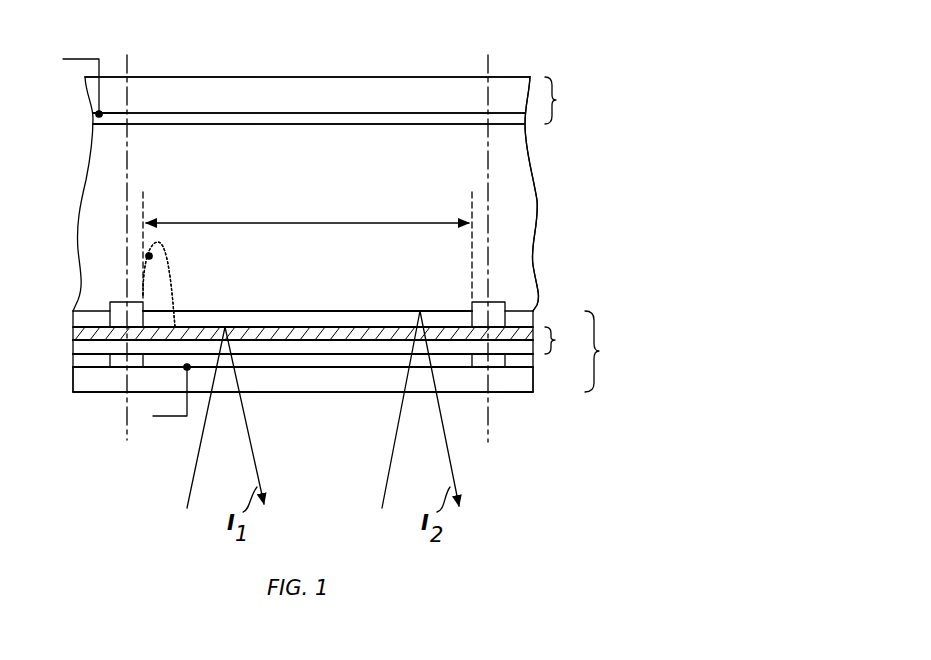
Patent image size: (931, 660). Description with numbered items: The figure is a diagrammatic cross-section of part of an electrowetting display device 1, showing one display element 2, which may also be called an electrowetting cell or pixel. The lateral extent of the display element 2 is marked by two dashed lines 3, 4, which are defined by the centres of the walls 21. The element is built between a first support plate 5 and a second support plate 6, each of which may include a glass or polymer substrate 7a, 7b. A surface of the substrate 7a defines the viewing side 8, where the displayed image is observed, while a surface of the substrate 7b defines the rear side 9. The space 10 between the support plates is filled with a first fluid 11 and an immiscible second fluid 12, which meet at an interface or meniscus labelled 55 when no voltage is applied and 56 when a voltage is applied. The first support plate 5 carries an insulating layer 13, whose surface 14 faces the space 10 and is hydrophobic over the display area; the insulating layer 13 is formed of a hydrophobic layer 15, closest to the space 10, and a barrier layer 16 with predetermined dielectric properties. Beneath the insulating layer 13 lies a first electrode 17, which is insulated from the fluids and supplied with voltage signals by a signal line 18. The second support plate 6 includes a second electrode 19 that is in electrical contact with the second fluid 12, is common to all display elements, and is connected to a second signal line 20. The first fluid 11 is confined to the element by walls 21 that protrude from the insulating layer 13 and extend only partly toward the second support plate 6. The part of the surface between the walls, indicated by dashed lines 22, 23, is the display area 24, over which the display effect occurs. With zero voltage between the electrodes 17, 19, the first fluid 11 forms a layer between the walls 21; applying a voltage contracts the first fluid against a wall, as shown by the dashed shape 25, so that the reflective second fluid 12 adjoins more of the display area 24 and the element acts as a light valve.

The electrowetting display device 1 is at (598, 51).
The display element 2 is at (306, 41).
The dashed line 3 is at (127, 60).
The dashed line 4 is at (488, 60).
The first support plate 5 is at (345, 351).
The second support plate 6 is at (561, 100).
The substrate 7a is at (515, 392).
The substrate 7b is at (441, 85).
The viewing side 8 is at (270, 392).
The rear side 9 is at (213, 77).
The space 10 is at (370, 140).
The first fluid 11 is at (440, 320).
The second fluid 12 is at (531, 200).
The insulating layer 13 is at (321, 342).
The surface 14 is at (349, 320).
The layer 15 is at (303, 337).
The barrier layer 16 is at (258, 345).
The first electrode 17 is at (372, 358).
The signal line 18 is at (172, 417).
The second electrode 19 is at (115, 118).
The second signal line 20 is at (77, 59).
The walls 21 is at (117, 312).
The dashed line 22 is at (472, 197).
The dashed line 23 is at (143, 201).
The display area 24 is at (307, 213).
The dashed shape 25 is at (149, 256).
The interface 55 is at (393, 320).
The interface 56 is at (172, 276).